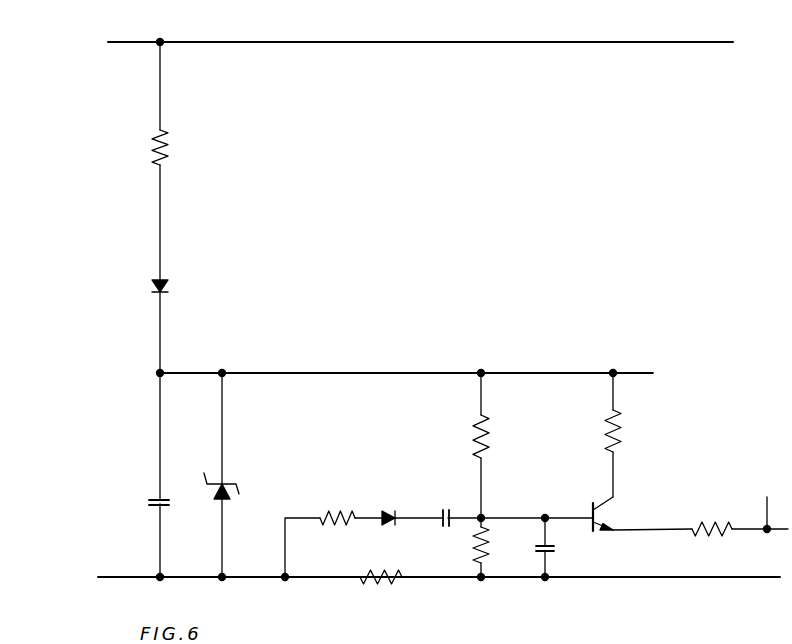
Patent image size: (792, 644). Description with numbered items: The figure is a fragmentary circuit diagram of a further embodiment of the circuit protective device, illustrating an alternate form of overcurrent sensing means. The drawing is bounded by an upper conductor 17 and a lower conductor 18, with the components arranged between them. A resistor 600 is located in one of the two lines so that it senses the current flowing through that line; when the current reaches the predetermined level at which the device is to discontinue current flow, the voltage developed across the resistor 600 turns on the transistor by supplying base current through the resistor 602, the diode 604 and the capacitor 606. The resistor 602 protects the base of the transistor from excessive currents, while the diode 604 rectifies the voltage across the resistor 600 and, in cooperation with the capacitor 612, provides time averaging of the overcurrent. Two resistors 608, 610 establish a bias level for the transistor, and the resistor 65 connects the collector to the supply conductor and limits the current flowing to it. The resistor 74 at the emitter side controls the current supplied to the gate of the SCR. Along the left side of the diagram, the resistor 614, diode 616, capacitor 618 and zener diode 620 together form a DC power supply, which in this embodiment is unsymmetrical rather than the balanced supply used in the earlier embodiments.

The supply bus line 17 is at (330, 42).
The ground line 18 is at (598, 579).
The resistor 65 is at (623, 436).
The resistor 74 is at (714, 526).
The resistor 600 is at (381, 586).
The resistor 602 is at (338, 513).
The diode 604 is at (390, 524).
The capacitor 606 is at (445, 509).
The resistor 608 is at (493, 441).
The resistor 610 is at (477, 547).
The capacitor 612 is at (560, 548).
The resistor 614 is at (166, 152).
The diode 616 is at (170, 290).
The capacitor 618 is at (165, 506).
The zener diode 620 is at (228, 481).